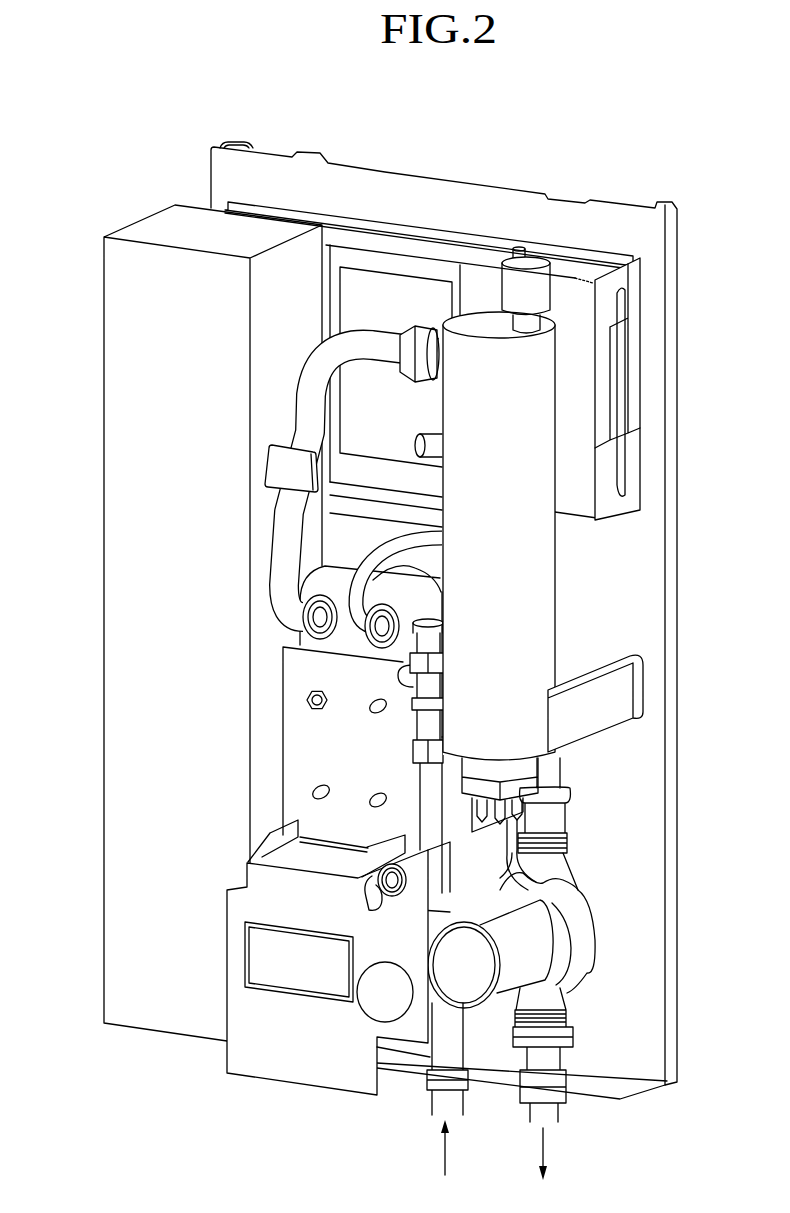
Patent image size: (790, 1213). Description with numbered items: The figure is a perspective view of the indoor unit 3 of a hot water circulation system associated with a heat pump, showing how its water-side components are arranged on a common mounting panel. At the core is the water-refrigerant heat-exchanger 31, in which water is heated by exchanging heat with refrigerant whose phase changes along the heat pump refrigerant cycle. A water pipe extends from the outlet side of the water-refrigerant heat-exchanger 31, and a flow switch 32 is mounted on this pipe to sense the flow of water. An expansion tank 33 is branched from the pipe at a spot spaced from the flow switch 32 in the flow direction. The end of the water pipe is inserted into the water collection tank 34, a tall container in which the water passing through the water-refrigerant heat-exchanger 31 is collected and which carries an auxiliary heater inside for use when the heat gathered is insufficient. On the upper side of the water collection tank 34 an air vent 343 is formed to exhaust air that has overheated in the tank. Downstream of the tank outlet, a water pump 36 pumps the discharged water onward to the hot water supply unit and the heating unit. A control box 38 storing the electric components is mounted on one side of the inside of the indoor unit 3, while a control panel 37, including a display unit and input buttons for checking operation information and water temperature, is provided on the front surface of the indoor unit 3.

The indoor unit 3 is at (518, 143).
The water-refrigerant heat-exchanger 31 is at (313, 747).
The flow switch 32 is at (272, 468).
The expansion tank 33 is at (605, 353).
The water collection tank 34 is at (548, 405).
The air vent 343 is at (528, 257).
The water pump 36 is at (532, 953).
The control panel 37 is at (290, 1057).
The control box 38 is at (127, 871).